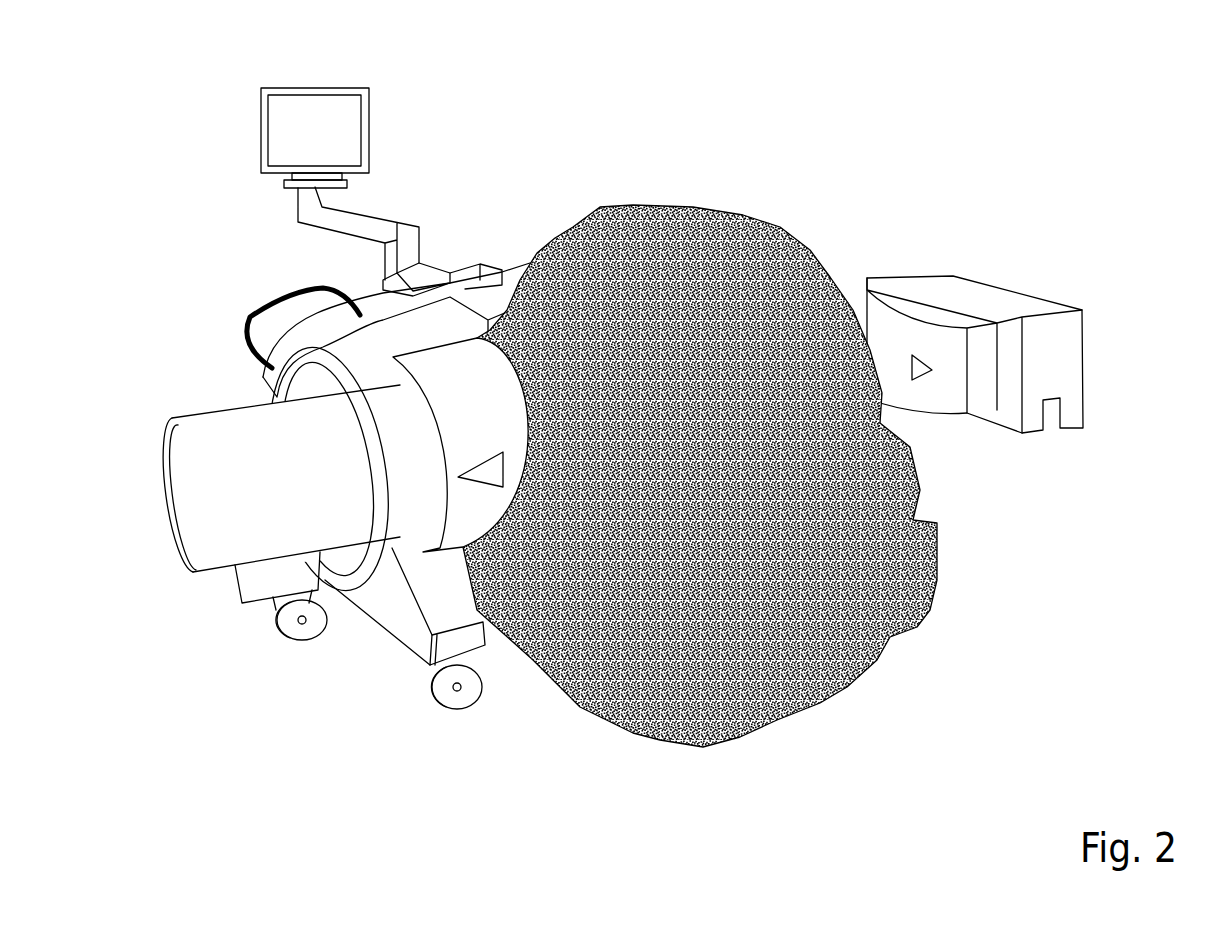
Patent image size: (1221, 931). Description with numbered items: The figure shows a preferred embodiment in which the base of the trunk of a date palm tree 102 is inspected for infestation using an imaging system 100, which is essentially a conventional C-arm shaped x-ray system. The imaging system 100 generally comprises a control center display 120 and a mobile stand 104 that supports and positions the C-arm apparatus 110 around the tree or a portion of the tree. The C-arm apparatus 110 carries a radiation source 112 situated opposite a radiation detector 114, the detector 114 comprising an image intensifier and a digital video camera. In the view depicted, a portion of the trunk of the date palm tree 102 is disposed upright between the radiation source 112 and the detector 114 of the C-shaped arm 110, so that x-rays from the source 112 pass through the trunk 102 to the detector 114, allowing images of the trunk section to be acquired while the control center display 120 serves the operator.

The imaging system 100 is at (612, 411).
The trunk of a date palm tree 102 is at (718, 243).
The mobile stand 104 is at (443, 598).
The C-arm apparatus 110 is at (330, 330).
The radiation source 112 is at (996, 298).
The radiation detector 114 is at (427, 473).
The control center display 120 is at (303, 90).